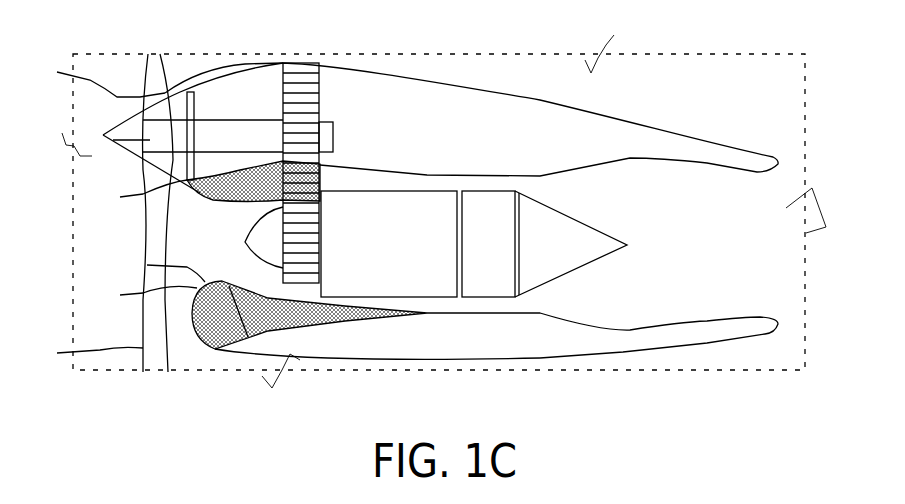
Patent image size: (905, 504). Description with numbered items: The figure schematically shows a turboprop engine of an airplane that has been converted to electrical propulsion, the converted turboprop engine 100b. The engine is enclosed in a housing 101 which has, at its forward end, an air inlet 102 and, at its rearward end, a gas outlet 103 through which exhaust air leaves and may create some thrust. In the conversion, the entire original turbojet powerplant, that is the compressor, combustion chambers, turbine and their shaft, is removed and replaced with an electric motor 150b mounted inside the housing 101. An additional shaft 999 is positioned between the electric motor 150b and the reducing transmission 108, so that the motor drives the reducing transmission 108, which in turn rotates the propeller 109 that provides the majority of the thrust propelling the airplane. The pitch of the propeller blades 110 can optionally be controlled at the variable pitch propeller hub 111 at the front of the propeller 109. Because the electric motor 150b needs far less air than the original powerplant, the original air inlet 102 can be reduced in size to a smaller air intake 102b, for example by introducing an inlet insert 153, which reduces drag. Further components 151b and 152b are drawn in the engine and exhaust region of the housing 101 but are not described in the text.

The converted turboprop engine 100b is at (708, 76).
The housing 101 is at (512, 96).
The air inlet 102 is at (309, 303).
The smaller air intake 102b is at (147, 265).
The gas outlet 103 is at (737, 315).
The reducing transmission 108 is at (283, 208).
The propeller 109 is at (181, 77).
The propeller blades 110 is at (92, 216).
The variable pitch propeller hub 111 is at (115, 143).
The electric motor 150b is at (390, 191).
The core engine aft section 151b is at (483, 191).
The exhaust cone 152b is at (579, 226).
The inlet insert 153 is at (139, 244).
The additional shaft 999 is at (320, 268).